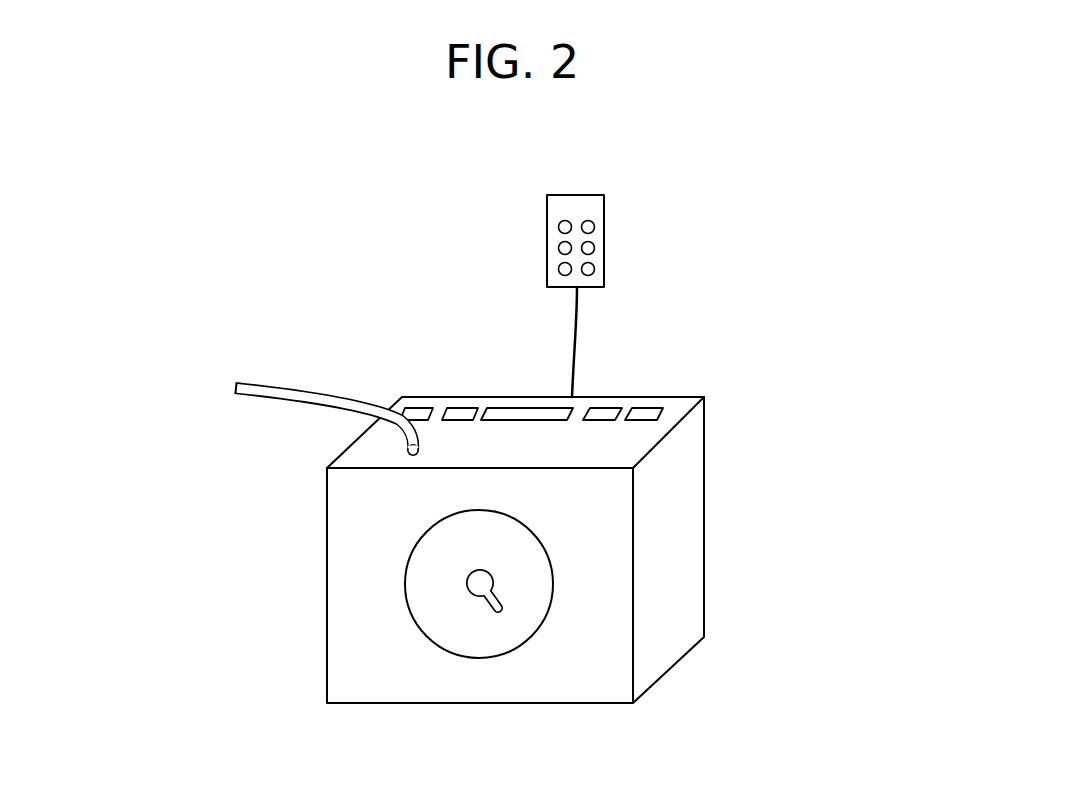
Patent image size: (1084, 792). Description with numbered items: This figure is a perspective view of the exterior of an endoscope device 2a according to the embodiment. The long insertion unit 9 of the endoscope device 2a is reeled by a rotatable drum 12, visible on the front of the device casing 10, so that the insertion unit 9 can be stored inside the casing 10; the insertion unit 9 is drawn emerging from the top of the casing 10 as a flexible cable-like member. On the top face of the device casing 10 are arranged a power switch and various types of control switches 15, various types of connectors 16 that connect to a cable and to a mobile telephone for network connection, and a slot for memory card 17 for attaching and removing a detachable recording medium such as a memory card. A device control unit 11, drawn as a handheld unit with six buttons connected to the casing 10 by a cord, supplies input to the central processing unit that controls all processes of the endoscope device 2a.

The endoscope device 2a is at (750, 372).
The long insertion unit 9 is at (328, 404).
The device casing 10 is at (673, 542).
The device control unit 11 is at (605, 230).
The rotatable drum 12 is at (475, 643).
The control switches 15 is at (457, 415).
The connectors 16 is at (637, 397).
The slot for memory card 17 is at (522, 396).